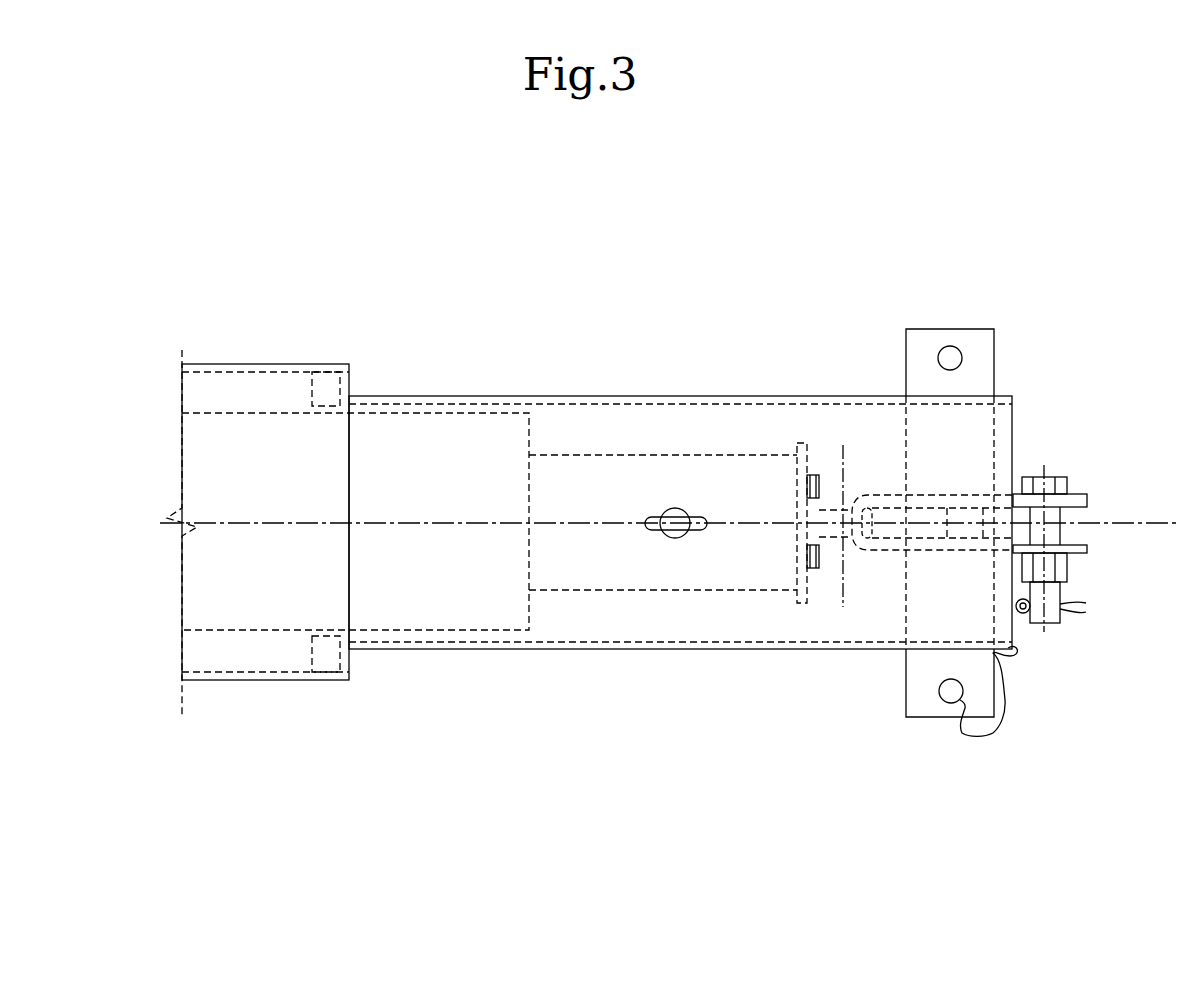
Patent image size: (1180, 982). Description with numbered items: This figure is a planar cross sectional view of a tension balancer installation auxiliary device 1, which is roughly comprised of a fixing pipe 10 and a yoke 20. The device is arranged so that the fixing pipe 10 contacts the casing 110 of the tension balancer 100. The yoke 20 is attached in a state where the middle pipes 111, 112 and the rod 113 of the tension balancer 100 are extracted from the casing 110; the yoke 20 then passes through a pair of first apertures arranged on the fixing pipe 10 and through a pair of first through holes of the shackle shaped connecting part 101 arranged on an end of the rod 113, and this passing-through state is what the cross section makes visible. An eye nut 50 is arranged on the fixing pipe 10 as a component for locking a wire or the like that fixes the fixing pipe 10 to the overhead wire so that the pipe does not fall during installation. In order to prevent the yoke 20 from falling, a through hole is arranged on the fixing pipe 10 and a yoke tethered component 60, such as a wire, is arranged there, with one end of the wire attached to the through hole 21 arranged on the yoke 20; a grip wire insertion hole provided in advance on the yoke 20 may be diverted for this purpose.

The tension balancer installation auxiliary device 1 is at (567, 204).
The fixing pipe 10 is at (620, 396).
The yoke 20 is at (970, 336).
The through hole 21 is at (940, 693).
The eye nut 50 is at (687, 517).
The yoke tethered component 60 is at (1003, 683).
The tension balancer 100 is at (237, 346).
The shackle shaped connecting part 101 is at (1077, 495).
The casing 110 is at (242, 680).
The middle pipe 111 is at (450, 630).
The middle pipe 112 is at (655, 591).
The rod 113 is at (835, 545).